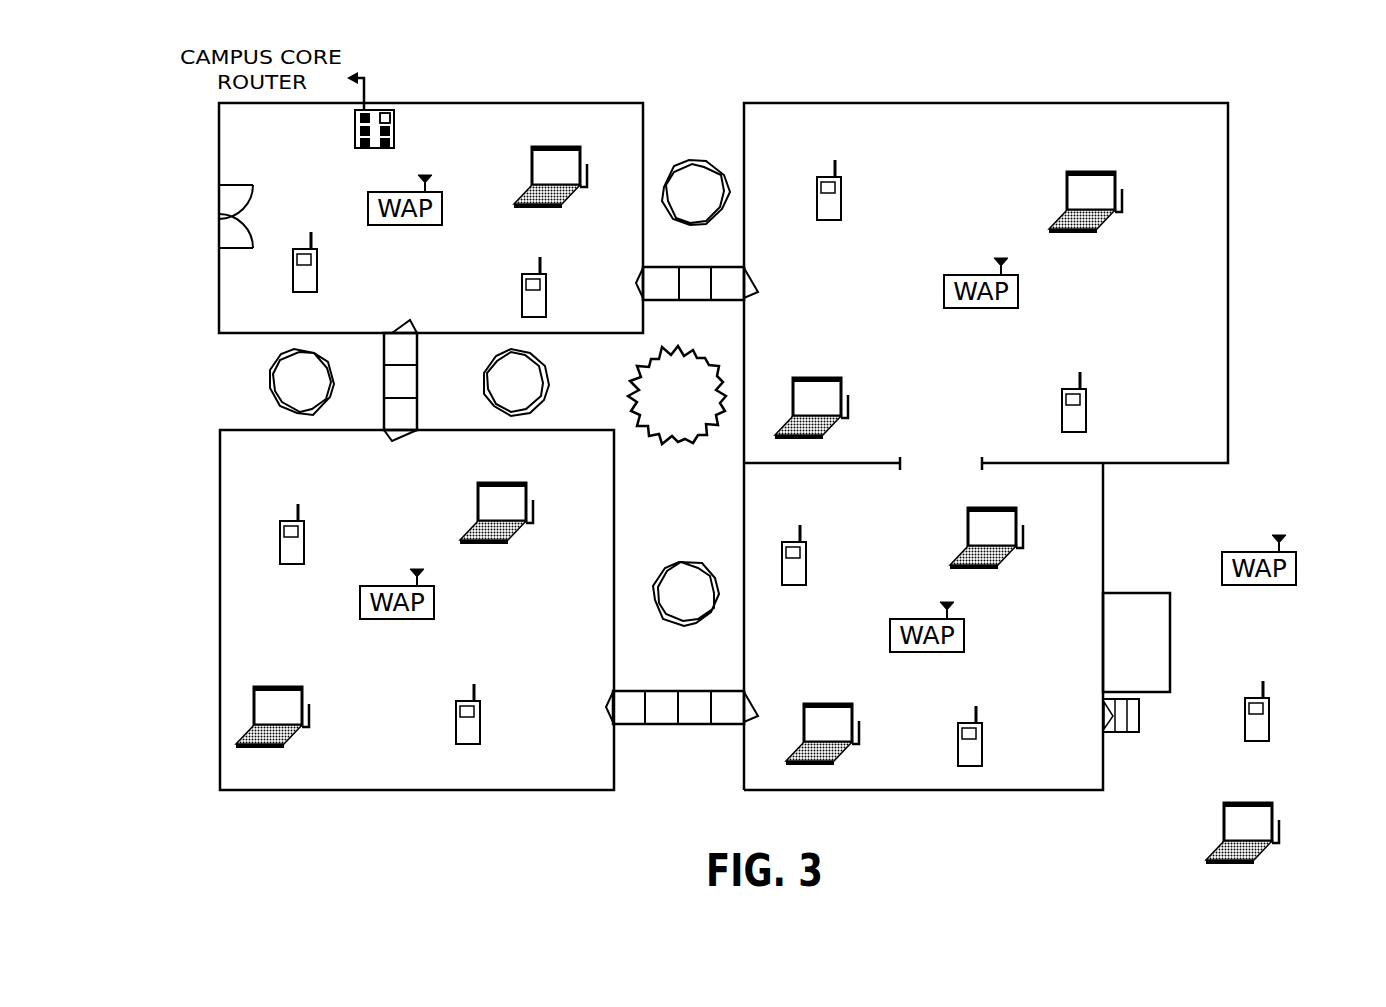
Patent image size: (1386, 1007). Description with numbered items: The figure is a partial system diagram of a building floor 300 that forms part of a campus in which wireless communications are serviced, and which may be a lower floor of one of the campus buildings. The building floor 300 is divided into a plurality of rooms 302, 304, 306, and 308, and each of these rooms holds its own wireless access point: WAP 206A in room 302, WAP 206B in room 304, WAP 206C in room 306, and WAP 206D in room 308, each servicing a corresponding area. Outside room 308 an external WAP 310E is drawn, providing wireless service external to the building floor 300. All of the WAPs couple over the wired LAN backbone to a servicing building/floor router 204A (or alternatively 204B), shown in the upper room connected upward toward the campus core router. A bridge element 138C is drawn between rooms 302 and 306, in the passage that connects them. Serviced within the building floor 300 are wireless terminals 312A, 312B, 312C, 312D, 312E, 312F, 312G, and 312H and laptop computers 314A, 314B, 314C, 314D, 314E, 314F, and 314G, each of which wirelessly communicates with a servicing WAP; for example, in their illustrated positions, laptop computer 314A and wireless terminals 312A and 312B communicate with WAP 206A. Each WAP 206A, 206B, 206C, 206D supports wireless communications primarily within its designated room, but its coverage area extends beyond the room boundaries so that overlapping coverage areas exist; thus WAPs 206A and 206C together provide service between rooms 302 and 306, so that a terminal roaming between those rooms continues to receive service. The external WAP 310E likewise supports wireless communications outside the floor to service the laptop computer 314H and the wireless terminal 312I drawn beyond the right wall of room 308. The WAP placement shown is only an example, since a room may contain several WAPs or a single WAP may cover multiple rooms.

The building floor 300 is at (319, 833).
The room 302 is at (607, 101).
The room 304 is at (828, 101).
The room 306 is at (382, 793).
The room 308 is at (919, 792).
The network bridge 138C is at (387, 432).
The servicing building/floor router 204A is at (353, 133).
The servicing building/floor router 204B is at (318, 135).
The WAP 206A is at (443, 207).
The WAP 206B is at (1019, 290).
The WAP 206C is at (434, 602).
The WAP 206D is at (965, 635).
The outdoor wireless access point 310E is at (1297, 567).
The wireless terminal 312A is at (317, 279).
The wireless terminal 312B is at (546, 306).
The wireless terminal 312C is at (841, 205).
The wireless terminal 312D is at (1086, 418).
The wireless terminal 312E is at (305, 549).
The wireless terminal 312F is at (481, 731).
The wireless terminal 312G is at (806, 572).
The wireless terminal 312H is at (983, 752).
The wireless terminal 312I is at (1268, 727).
The laptop computer 314A is at (548, 150).
The laptop computer 314B is at (808, 380).
The laptop computer 314C is at (1082, 174).
The laptop computer 314D is at (268, 689).
The laptop computer 314E is at (493, 485).
The laptop computer 314F is at (818, 706).
The laptop computer 314G is at (983, 510).
The laptop computer 314H is at (1238, 805).